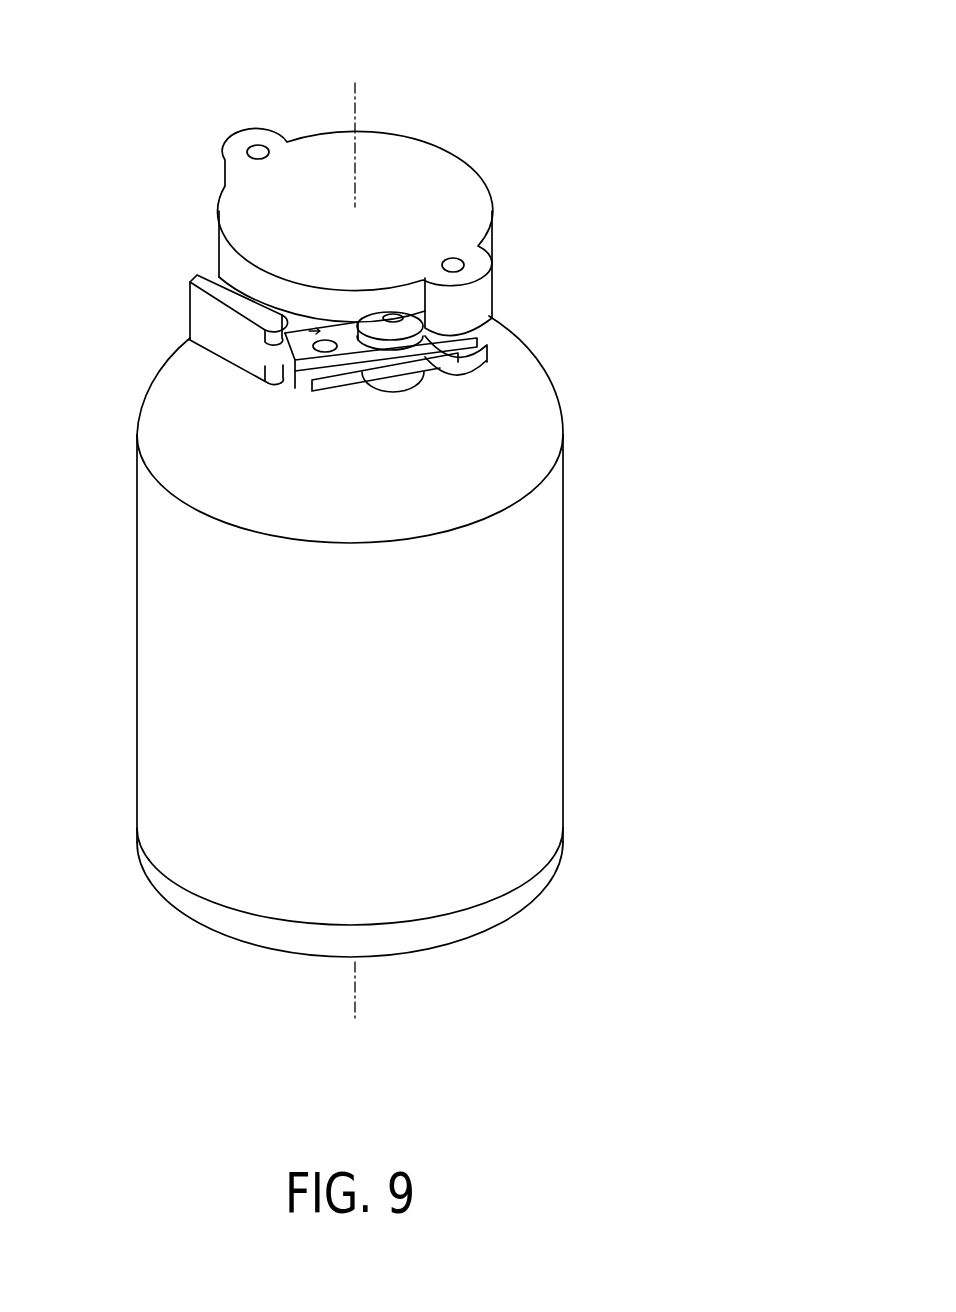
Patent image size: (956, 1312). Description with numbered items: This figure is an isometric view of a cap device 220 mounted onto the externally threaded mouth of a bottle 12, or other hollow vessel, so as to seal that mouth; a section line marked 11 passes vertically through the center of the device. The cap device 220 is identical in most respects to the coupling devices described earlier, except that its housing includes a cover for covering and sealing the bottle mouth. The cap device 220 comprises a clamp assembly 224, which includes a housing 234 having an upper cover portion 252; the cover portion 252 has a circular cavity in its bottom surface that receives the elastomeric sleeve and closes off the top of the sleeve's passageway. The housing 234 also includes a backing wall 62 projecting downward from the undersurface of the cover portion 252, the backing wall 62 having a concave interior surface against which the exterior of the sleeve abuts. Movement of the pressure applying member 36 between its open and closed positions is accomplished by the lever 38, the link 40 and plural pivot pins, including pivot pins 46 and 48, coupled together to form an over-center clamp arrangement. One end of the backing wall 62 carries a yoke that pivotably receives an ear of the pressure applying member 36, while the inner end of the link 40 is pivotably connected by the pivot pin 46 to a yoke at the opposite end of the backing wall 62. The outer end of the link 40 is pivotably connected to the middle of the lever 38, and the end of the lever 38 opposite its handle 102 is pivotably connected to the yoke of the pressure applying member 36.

The section line 11- 11 is at (355, 83).
The bottle 12 is at (488, 696).
The pressure applying member 36 is at (225, 278).
The lever 38 is at (252, 348).
The link 40 is at (362, 373).
The pivot pin 46 is at (247, 146).
The pivot pin 48 is at (455, 272).
The backing wall 62 is at (492, 240).
The handle 102 is at (212, 328).
The cap device 220 is at (583, 222).
The clamp assembly 224 is at (443, 186).
The housing 234 is at (488, 278).
The cover portion 252 is at (398, 162).